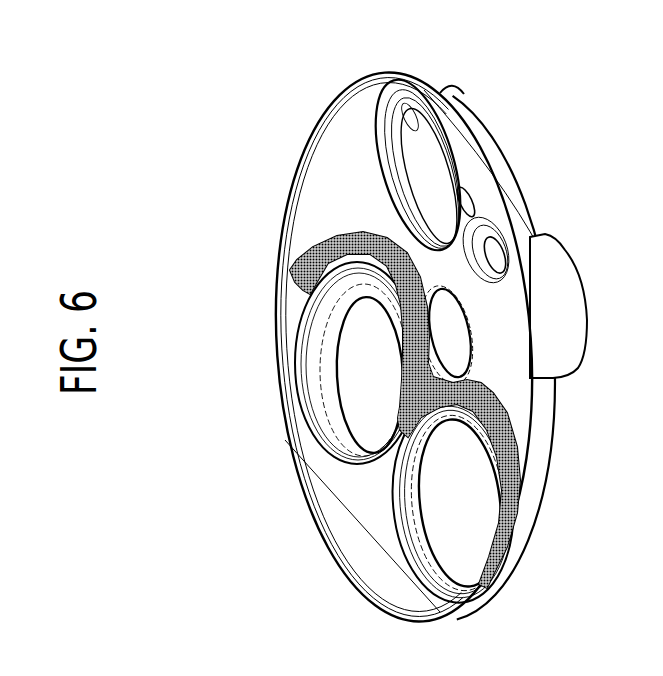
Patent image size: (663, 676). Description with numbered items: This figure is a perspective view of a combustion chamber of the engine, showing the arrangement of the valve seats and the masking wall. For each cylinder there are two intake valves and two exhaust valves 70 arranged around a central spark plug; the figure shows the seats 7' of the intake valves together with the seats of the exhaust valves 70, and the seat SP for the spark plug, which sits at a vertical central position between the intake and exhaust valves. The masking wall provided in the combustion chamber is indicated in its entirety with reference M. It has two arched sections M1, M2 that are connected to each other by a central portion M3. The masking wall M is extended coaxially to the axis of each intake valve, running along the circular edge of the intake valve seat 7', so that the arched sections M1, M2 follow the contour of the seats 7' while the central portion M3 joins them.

The exhaust valve 70 is at (386, 78).
The masking wall M is at (415, 377).
The arched section M1 is at (372, 230).
The arched section M2 is at (506, 462).
The central portion M3 is at (403, 437).
The seat for the spark plug SP is at (452, 347).
The seat of the intake valve 7' is at (379, 447).